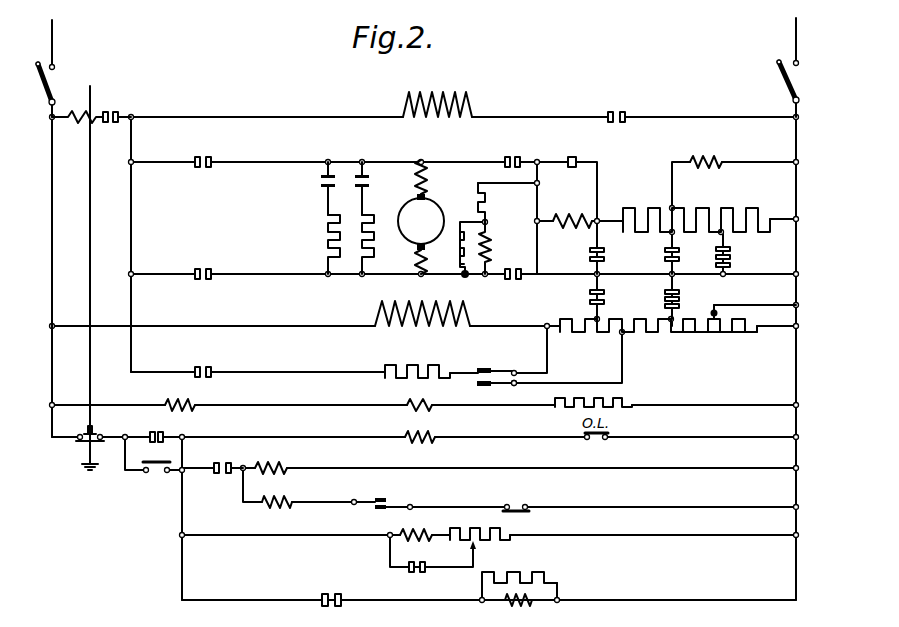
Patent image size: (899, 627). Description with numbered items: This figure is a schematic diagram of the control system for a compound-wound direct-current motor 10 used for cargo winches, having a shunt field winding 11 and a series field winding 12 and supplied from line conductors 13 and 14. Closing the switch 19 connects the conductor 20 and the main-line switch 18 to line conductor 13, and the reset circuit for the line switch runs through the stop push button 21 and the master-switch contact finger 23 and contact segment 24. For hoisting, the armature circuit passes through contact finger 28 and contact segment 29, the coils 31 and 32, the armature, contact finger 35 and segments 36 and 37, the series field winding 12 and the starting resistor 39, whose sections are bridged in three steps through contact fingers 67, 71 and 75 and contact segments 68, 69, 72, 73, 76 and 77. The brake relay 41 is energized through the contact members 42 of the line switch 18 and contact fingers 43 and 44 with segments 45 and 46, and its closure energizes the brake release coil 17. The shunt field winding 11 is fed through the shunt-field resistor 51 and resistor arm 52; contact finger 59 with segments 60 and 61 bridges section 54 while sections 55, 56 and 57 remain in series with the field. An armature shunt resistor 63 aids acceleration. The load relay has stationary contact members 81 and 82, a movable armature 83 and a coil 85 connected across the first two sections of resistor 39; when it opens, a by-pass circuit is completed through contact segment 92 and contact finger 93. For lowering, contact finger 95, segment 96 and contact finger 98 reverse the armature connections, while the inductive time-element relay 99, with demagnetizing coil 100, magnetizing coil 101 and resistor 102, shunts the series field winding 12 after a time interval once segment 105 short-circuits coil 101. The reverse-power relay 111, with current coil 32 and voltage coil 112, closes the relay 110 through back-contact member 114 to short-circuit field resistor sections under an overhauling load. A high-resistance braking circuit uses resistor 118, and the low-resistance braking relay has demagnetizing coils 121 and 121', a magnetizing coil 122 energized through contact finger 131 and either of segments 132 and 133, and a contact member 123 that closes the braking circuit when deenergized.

The direct-current motor 10 is at (421, 221).
The shunt field winding 11 is at (426, 302).
The series field winding 12 is at (580, 198).
The line conductor 13 is at (52, 38).
The line conductor 14 is at (790, 38).
The release coil 17 is at (446, 84).
The main-line switch 18 is at (432, 432).
The switch 19 is at (58, 92).
The conductor 20 is at (52, 232).
The stop push button 21 is at (92, 426).
The contact finger 23 is at (151, 431).
The contact segment 24 is at (163, 431).
The contact finger 28 is at (195, 156).
The contact segment 29 is at (211, 156).
The current coil 31 is at (424, 170).
The current coil 32 is at (425, 190).
The contact finger 35 is at (506, 280).
The contact segment 36 is at (520, 280).
The contact segment 37 is at (524, 150).
The starting resistor 39 is at (696, 209).
The relay 41 is at (278, 466).
The contact members 42 is at (155, 476).
The contact finger 43 is at (411, 561).
The contact finger 44 is at (215, 462).
The contact segment 45 is at (230, 462).
The contact segment 46 is at (232, 468).
The shunt-field resistor 51 is at (658, 338).
The resistor arm 52 is at (754, 300).
The resistor section 54 is at (680, 335).
The resistor section 55 is at (648, 314).
The resistor section 56 is at (618, 314).
The resistor section 57 is at (572, 314).
The contact finger 59 is at (679, 291).
The contact segment 60 is at (679, 298).
The contact segment 61 is at (679, 306).
The armature shunt resistor 63 is at (376, 218).
The contact finger 67 is at (730, 248).
The contact segment 68 is at (730, 257).
The contact segment 69 is at (730, 265).
The contact finger 71 is at (679, 249).
The contact segment 72 is at (679, 259).
The contact segment 73 is at (665, 262).
The contact finger 75 is at (604, 249).
The contact segment 76 is at (604, 259).
The contact segment 77 is at (590, 262).
The stationary contact member 81 is at (492, 388).
The stationary contact member 82 is at (486, 366).
The movable armature 83 is at (477, 383).
The coil 85 is at (716, 155).
The contact segment 92 is at (196, 366).
The contact finger 93 is at (211, 366).
The contact finger 95 is at (196, 268).
The contact segment 96 is at (211, 268).
The contact finger 98 is at (506, 156).
The inductive time-element relay 99 is at (578, 150).
The demagnetizing coil 100 is at (418, 396).
The magnetizing coil 101 is at (426, 524).
The resistor 102 is at (490, 522).
The contact segment 105 is at (424, 561).
The relay 110 is at (278, 494).
The reverse-power relay 111 is at (386, 496).
The voltage coil 112 is at (492, 250).
The back-contact member 114 is at (515, 504).
The resistor 118 is at (328, 222).
The demagnetizing coil 121 is at (176, 395).
The demagnetizing coil 121' is at (615, 409).
The magnetizing coil 122 is at (518, 606).
The contact member 123 is at (526, 572).
The contact finger 131 is at (320, 592).
The contact segment 132 is at (340, 592).
The contact segment 133 is at (343, 596).